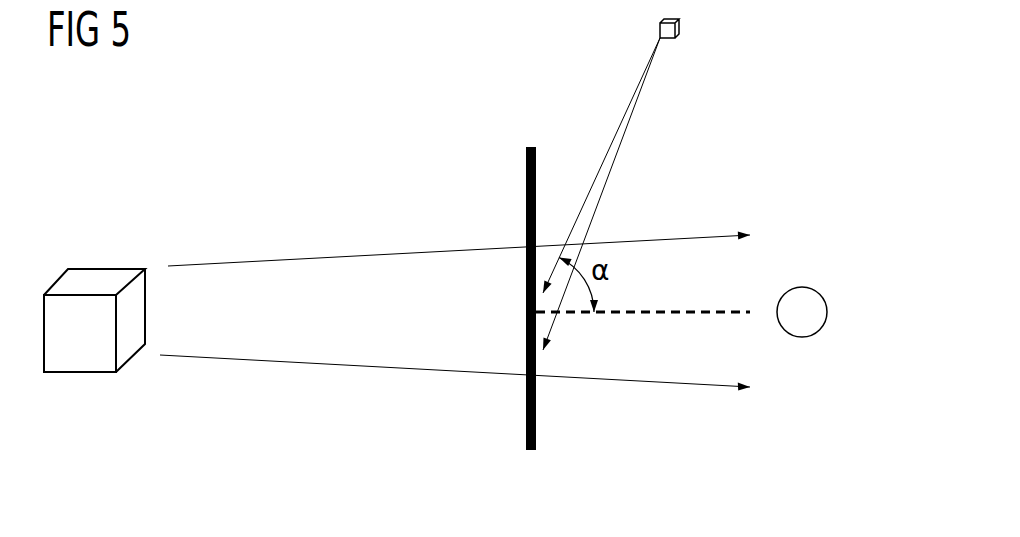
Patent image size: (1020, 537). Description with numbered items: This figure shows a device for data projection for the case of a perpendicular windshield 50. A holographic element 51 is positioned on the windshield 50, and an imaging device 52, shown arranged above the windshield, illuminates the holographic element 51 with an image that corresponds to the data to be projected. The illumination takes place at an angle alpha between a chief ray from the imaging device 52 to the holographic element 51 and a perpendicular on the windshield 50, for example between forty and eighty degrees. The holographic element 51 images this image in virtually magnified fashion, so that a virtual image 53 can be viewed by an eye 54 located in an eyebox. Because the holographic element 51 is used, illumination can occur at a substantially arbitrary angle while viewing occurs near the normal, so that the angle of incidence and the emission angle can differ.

The windshield 50 is at (526, 186).
The holographic element 51 is at (526, 312).
The imaging device 52 is at (681, 24).
The virtual image 53 is at (98, 273).
The eye 54 is at (800, 288).